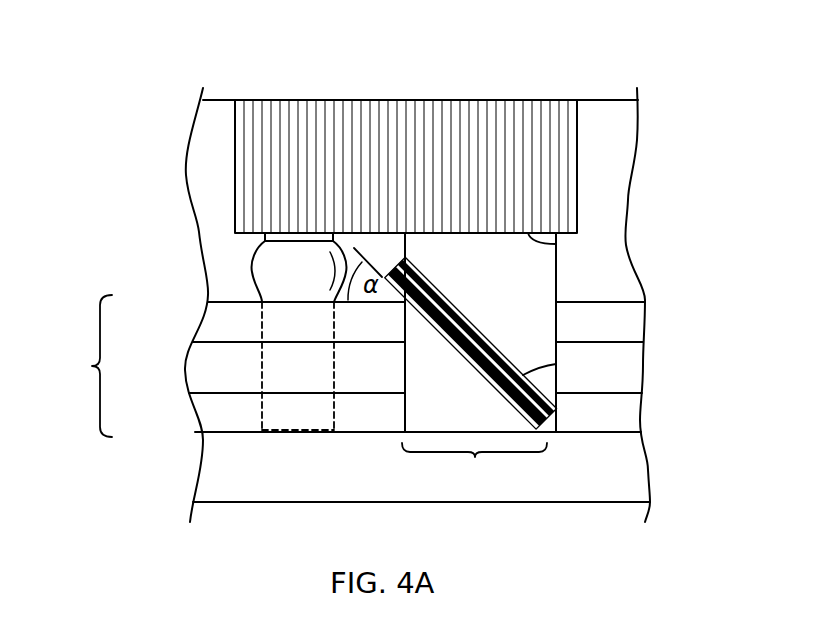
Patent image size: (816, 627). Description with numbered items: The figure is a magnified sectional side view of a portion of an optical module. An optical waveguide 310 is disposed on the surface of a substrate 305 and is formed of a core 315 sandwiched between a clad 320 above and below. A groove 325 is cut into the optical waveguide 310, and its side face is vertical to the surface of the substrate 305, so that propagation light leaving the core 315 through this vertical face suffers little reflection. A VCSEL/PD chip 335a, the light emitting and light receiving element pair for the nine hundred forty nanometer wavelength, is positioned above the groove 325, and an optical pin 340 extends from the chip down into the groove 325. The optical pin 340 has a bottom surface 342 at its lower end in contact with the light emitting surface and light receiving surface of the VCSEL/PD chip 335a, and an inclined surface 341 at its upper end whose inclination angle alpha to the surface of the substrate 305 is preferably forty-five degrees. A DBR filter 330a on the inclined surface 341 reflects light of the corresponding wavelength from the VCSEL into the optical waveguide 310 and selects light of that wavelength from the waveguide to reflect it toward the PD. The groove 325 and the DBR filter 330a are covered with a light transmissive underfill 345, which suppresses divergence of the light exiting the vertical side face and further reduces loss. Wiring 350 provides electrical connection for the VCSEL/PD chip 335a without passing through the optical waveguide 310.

The substrate 305 is at (207, 476).
The optical waveguide 310 is at (74, 366).
The core 315 is at (198, 370).
The clad 320 is at (205, 322).
The groove 325 is at (474, 365).
The DBR filter 330a is at (548, 418).
The VCSEL/PD chip 335a is at (378, 111).
The optical pin 340 is at (536, 293).
The inclined surface 341 is at (556, 364).
The bottom surface 342 is at (556, 244).
The underfill 345 is at (597, 112).
The wiring 350 is at (262, 421).